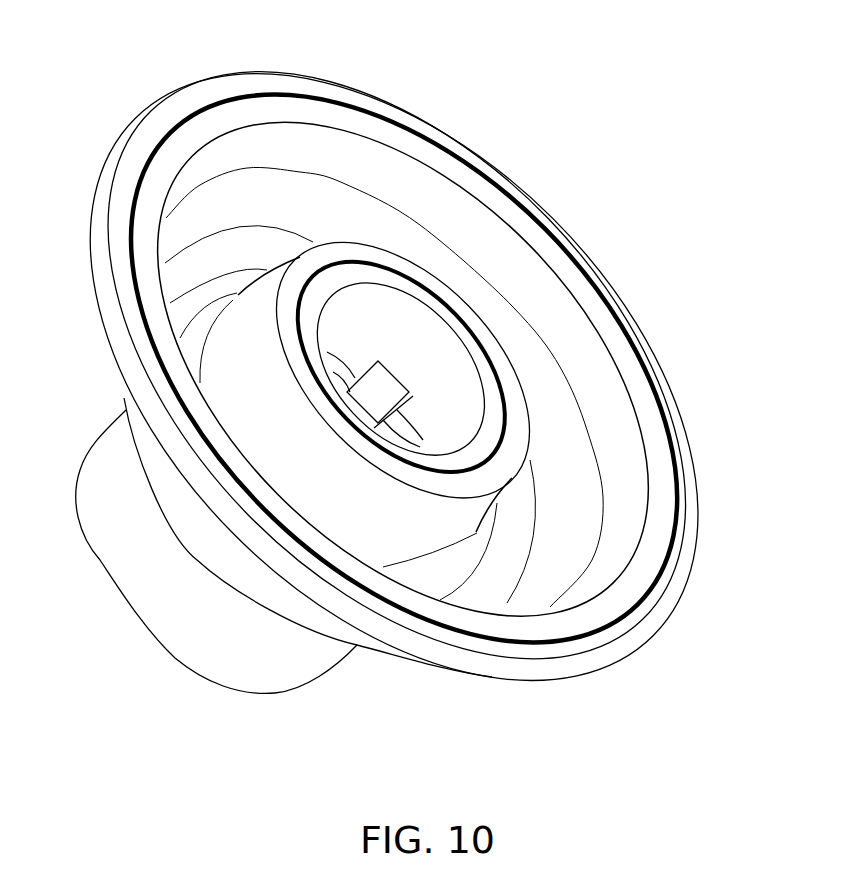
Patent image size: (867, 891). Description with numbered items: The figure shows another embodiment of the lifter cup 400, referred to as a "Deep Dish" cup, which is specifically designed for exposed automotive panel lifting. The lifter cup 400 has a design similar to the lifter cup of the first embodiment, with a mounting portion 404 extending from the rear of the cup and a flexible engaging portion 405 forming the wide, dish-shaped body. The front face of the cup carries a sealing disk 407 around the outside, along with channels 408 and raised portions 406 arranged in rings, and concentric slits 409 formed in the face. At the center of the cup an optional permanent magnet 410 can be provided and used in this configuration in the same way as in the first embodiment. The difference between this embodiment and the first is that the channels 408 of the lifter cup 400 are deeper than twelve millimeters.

The lifter cup 400 is at (457, 97).
The mounting portion 404 is at (146, 598).
The flexible engaging portion 405 is at (598, 664).
The raised portions 406 is at (337, 247).
The sealing disk 407 is at (512, 194).
The channels 408 is at (617, 417).
The concentric slits 409 is at (200, 108).
The permanent magnet 410 is at (384, 388).